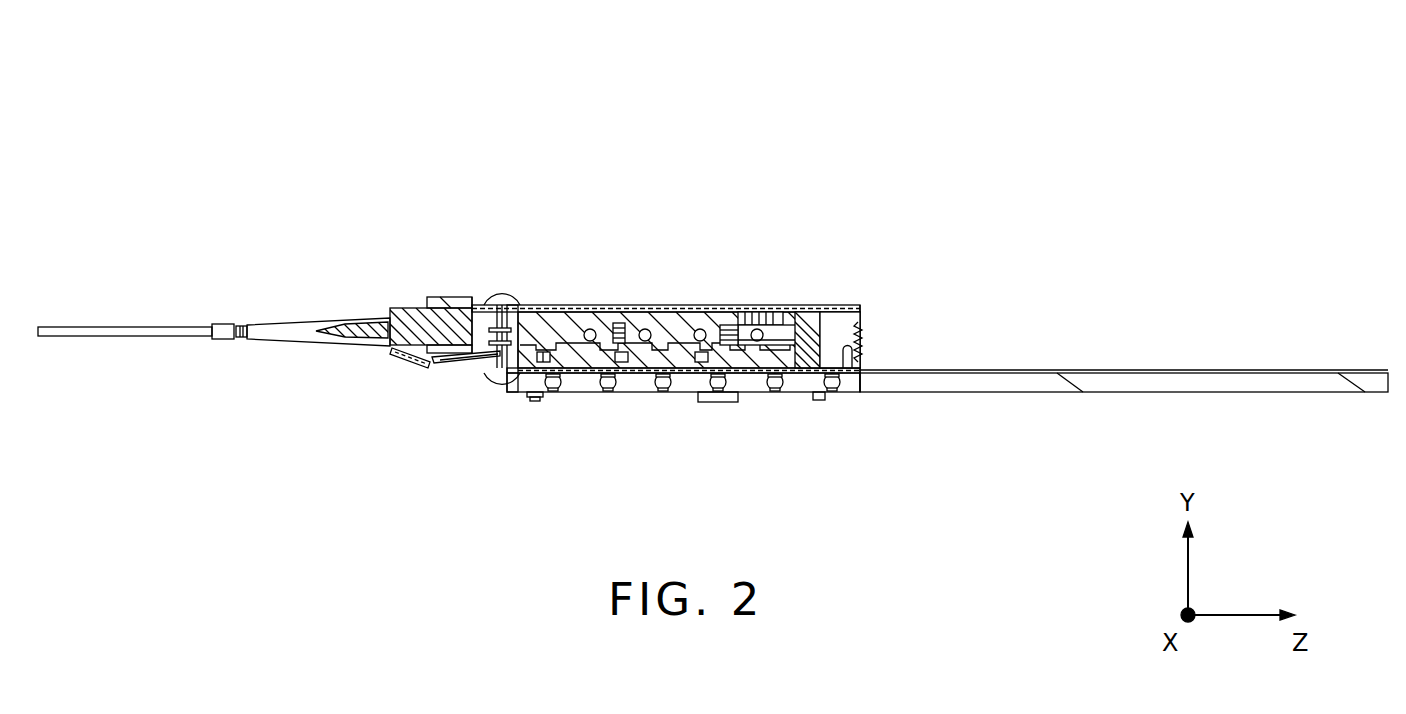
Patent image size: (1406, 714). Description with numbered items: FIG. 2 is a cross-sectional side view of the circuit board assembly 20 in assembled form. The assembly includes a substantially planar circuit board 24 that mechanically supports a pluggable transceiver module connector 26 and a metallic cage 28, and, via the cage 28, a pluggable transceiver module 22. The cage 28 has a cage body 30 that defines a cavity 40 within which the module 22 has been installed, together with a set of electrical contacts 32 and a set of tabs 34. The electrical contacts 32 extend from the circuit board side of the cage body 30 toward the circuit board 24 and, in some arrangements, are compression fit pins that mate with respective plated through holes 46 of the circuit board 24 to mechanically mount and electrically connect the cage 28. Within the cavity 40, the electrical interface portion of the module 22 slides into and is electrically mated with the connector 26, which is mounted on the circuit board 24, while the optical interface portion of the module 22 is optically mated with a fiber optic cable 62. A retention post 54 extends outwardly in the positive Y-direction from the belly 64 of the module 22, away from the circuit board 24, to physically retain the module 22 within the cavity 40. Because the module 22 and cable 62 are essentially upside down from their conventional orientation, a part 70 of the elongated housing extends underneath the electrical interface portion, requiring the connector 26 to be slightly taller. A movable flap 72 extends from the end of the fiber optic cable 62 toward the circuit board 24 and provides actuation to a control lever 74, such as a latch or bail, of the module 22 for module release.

The circuit board assembly 20 is at (259, 129).
The pluggable transceiver module 22 is at (632, 307).
The circuit board 24 is at (1118, 380).
The pluggable transceiver module connector 26 is at (788, 320).
The metallic cage 28 is at (859, 293).
The cage body 30 is at (730, 315).
The electrical contacts 32 is at (594, 398).
The tabs 34 is at (488, 283).
The cavity 40 is at (683, 330).
The plated through holes 46 is at (629, 395).
The retention post 54 is at (530, 285).
The fiber optic cable 62 is at (138, 301).
The belly 64 is at (579, 294).
The part of the elongated housing 70 is at (763, 358).
The movable flap 72 is at (407, 365).
The control lever 74 is at (453, 367).